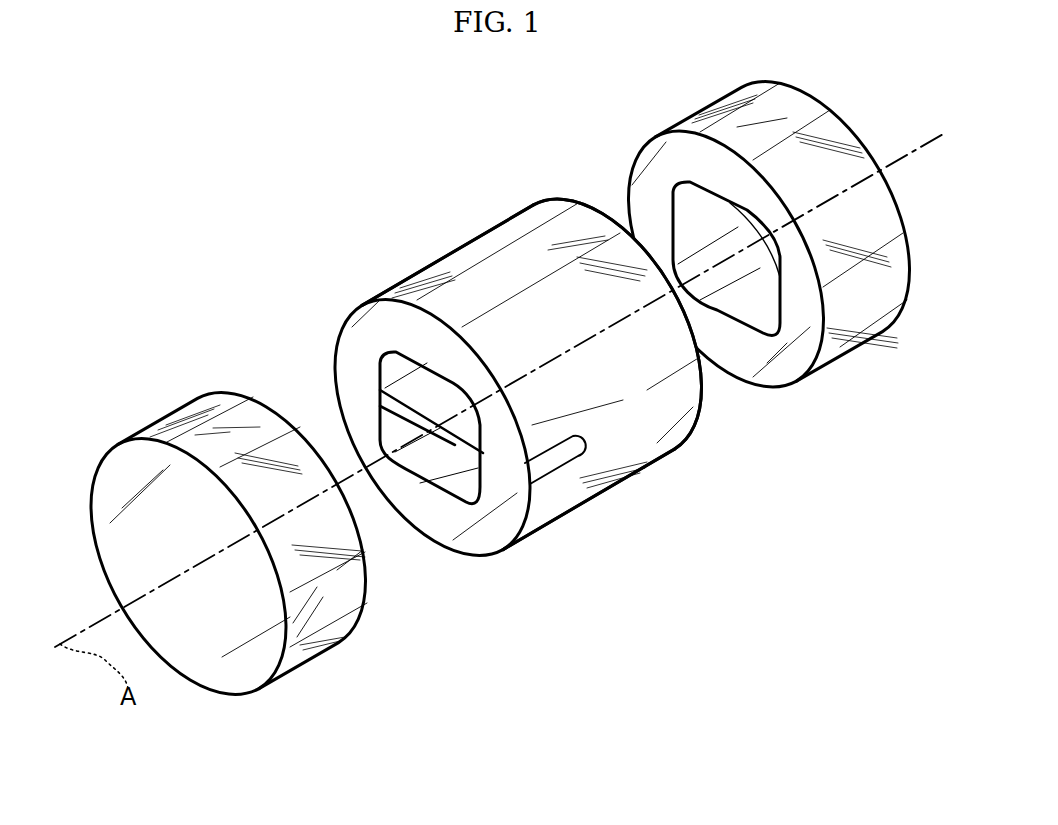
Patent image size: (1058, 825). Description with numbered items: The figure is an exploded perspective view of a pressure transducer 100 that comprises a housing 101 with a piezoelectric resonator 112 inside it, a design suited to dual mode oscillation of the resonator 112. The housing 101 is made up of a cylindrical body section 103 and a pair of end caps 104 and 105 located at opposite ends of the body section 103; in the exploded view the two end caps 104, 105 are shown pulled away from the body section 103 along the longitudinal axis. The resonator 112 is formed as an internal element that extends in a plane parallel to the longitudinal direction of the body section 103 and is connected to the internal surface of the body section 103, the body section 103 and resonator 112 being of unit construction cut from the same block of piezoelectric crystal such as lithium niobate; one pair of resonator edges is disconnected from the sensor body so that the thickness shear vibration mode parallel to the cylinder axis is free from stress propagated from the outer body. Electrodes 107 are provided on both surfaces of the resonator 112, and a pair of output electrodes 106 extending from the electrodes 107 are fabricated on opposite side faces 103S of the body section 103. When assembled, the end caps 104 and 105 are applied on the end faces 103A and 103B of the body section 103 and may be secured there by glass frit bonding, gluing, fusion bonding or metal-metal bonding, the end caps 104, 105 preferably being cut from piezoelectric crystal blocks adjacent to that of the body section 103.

The pressure transducer 100 is at (432, 226).
The housing 101 is at (500, 406).
The cylindrical body section 103 is at (480, 349).
The end face 103A is at (396, 337).
The end face 103B is at (592, 206).
The side face 103S is at (640, 420).
The end cap 104 is at (342, 548).
The end cap 105 is at (833, 352).
The output electrode 106 is at (547, 468).
The electrode 107 is at (452, 385).
The piezoelectric resonator 112 is at (380, 420).